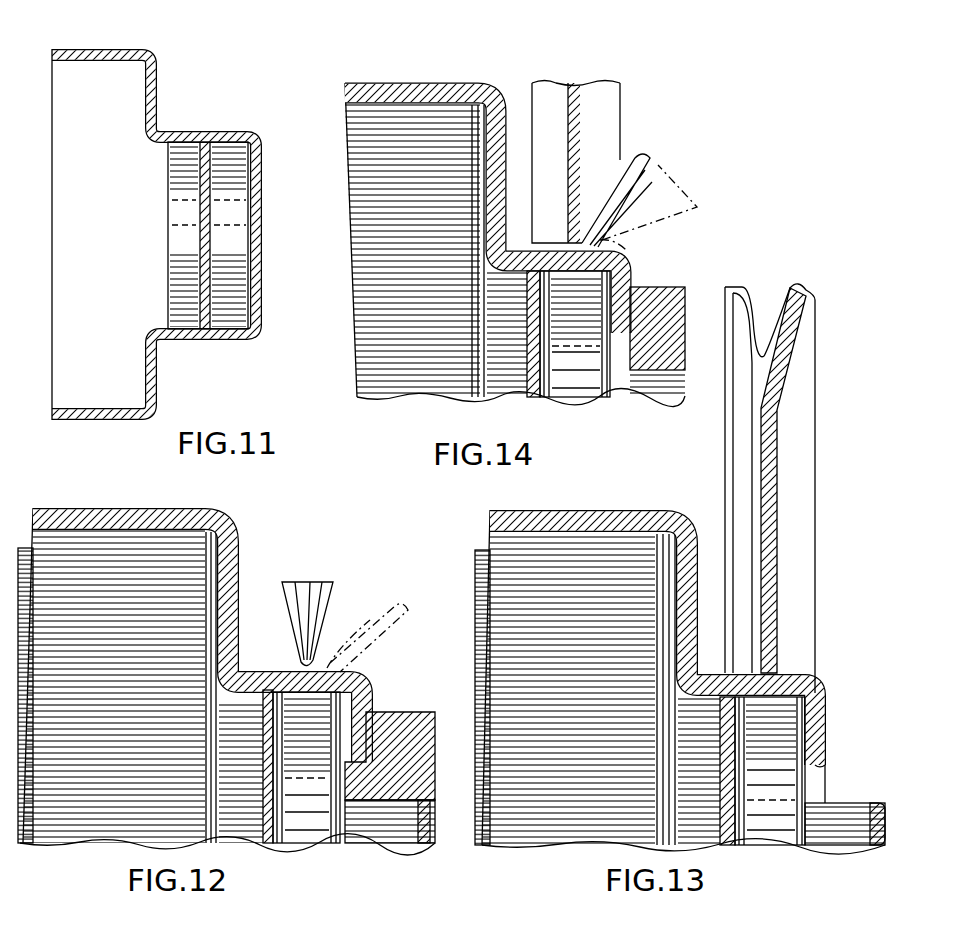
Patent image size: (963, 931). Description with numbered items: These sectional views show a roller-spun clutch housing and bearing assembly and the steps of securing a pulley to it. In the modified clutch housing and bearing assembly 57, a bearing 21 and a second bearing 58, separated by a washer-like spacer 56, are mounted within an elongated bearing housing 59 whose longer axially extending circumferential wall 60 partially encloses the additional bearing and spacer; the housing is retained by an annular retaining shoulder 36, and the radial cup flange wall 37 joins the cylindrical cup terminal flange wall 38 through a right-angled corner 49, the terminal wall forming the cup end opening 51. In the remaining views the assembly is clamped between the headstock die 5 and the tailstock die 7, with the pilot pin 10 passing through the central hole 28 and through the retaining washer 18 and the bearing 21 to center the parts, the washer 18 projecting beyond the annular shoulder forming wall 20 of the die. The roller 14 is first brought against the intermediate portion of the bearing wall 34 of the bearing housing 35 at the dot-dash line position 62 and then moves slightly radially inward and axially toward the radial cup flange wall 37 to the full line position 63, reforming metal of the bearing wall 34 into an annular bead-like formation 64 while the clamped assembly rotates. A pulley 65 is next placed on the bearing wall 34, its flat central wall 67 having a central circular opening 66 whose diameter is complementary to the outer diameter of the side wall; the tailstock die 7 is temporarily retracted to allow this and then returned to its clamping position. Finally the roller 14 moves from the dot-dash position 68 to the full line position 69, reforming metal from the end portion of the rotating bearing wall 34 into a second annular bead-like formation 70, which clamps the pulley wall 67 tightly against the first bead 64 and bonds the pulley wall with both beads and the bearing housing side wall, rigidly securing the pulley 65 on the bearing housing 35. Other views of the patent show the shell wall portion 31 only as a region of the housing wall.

In FIG. 14, the headstock die 5 is at (414, 240).
In FIG. 12, the headstock die 5 is at (66, 802).
In FIG. 13, the headstock die 5 is at (538, 562).
In FIG. 14, the tailstock die 7 is at (672, 296).
In FIG. 12, the tailstock die 7 is at (407, 717).
In FIG. 12, the pilot pin 10 is at (391, 827).
In FIG. 13, the pilot pin 10 is at (865, 806).
In FIG. 12, the roller 14 is at (325, 580).
In FIG. 12, the retaining washer 18 is at (266, 752).
In FIG. 13, the retaining washer 18 is at (735, 745).
In FIG. 14, the annular shoulder forming wall 20 is at (502, 360).
In FIG. 12, the annular shoulder forming wall 20 is at (241, 826).
In FIG. 13, the annular shoulder forming wall 20 is at (702, 800).
In FIG. 11, the bearing 21 is at (232, 226).
In FIG. 12, the bearing 21 is at (320, 822).
In FIG. 11, the central hole 28 is at (256, 292).
In FIG. 13, the central hole 28 is at (826, 776).
In FIG. 11, the shell wall 31 is at (260, 308).
In FIG. 12, the shell wall 31 is at (365, 749).
In FIG. 13, the shell wall 31 is at (822, 748).
In FIG. 14, the bearing wall 34 is at (565, 262).
In FIG. 12, the bearing wall 34 is at (276, 676).
In FIG. 13, the bearing wall 34 is at (782, 703).
In FIG. 14, the bearing housing 35 is at (633, 276).
In FIG. 12, the bearing housing 35 is at (370, 692).
In FIG. 13, the bearing housing 35 is at (824, 690).
In FIG. 11, the annular retaining shoulder 36 is at (158, 131).
In FIG. 14, the annular retaining shoulder 36 is at (512, 280).
In FIG. 12, the annular retaining shoulder 36 is at (232, 717).
In FIG. 13, the annular retaining shoulder 36 is at (682, 706).
In FIG. 11, the radial cup flange wall 37 is at (147, 372).
In FIG. 14, the radial cup flange wall 37 is at (492, 196).
In FIG. 12, the radial cup flange wall 37 is at (240, 578).
In FIG. 13, the radial cup flange wall 37 is at (684, 592).
In FIG. 11, the cylindrical cup terminal flange wall 38 is at (92, 52).
In FIG. 14, the cylindrical cup terminal flange wall 38 is at (418, 88).
In FIG. 12, the cylindrical cup terminal flange wall 38 is at (122, 508).
In FIG. 13, the cylindrical cup terminal flange wall 38 is at (607, 508).
In FIG. 12, the right-angled corner 49 is at (225, 517).
In FIG. 11, the cup end opening 51 is at (66, 405).
In FIG. 11, the washer-like spacer 56 is at (208, 302).
In FIG. 11, the modified clutch housing and bearing assembly 57 is at (182, 102).
In FIG. 11, the second bearing 58 is at (190, 158).
In FIG. 11, the elongated bearing housing 59 is at (238, 130).
In FIG. 11, the circumferential wall 60 is at (195, 336).
In FIG. 12, the dot-dash line position 62 is at (347, 670).
In FIG. 12, the full line position 63 is at (332, 622).
In FIG. 14, the annular bead-like formation 64 is at (560, 250).
In FIG. 12, the annular bead-like formation 64 is at (294, 688).
In FIG. 13, the annular bead-like formation 64 is at (757, 670).
In FIG. 13, the pulley 65 is at (810, 456).
In FIG. 13, the central circular opening 66 is at (770, 688).
In FIG. 14, the flat central wall 67 is at (578, 108).
In FIG. 13, the flat central wall 67 is at (772, 564).
In FIG. 14, the dot-dash position 68 is at (628, 250).
In FIG. 14, the full line position 69 is at (622, 198).
In FIG. 14, the second annular bead-like formation 70 is at (583, 262).